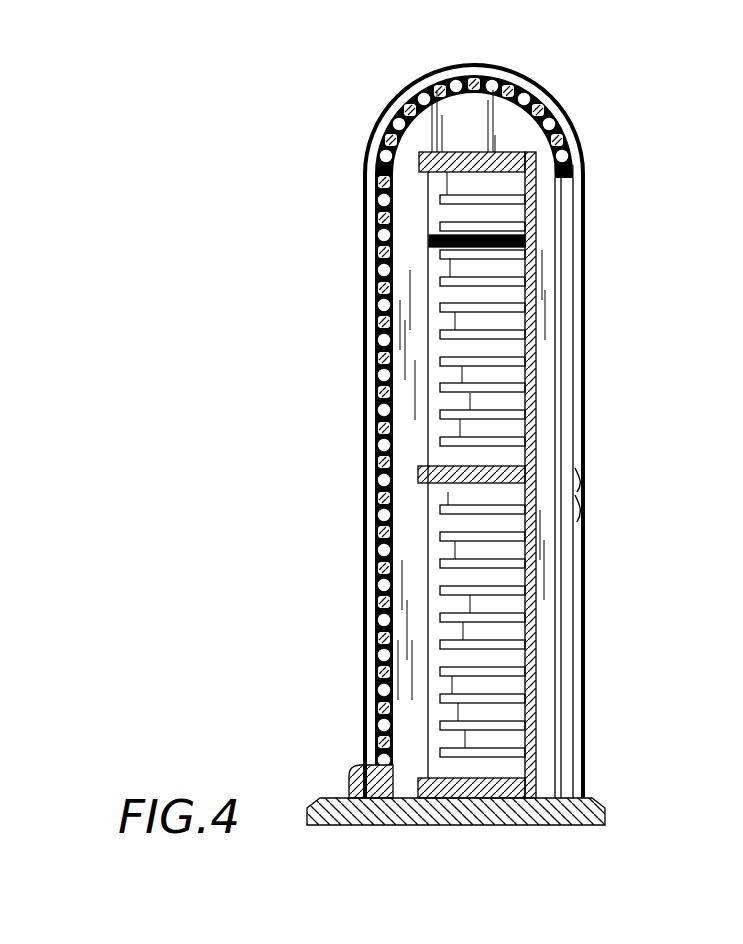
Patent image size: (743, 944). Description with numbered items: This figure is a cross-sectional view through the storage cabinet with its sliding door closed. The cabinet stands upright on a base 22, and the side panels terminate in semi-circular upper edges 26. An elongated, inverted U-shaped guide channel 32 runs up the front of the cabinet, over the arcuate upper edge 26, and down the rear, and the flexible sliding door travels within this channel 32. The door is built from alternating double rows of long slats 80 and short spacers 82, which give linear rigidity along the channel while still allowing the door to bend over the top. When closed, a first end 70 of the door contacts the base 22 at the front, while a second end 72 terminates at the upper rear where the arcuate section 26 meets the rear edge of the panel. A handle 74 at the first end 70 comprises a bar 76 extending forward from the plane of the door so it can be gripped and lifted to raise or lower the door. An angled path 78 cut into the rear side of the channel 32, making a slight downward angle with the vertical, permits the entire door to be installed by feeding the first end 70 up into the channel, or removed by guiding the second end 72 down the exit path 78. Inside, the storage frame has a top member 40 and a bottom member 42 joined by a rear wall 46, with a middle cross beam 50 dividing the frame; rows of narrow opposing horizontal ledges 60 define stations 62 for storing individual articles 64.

The base 22 is at (490, 825).
The semi-circular upper edges 26 is at (503, 63).
The guide channels 32 is at (570, 244).
The top member 40 is at (507, 150).
The bottom member 42 is at (502, 780).
The rear wall 46 is at (536, 612).
The middle cross beam 50 is at (417, 467).
The horizontal ledges 60 is at (447, 266).
The stations 62 is at (443, 288).
The articles 64 is at (425, 237).
The first end 70 is at (362, 788).
The second end 72 is at (566, 172).
The handle 74 is at (338, 768).
The bar 76 is at (352, 766).
The angled path 78 is at (583, 503).
The long slats 80 is at (405, 95).
The spacers 82 is at (380, 127).